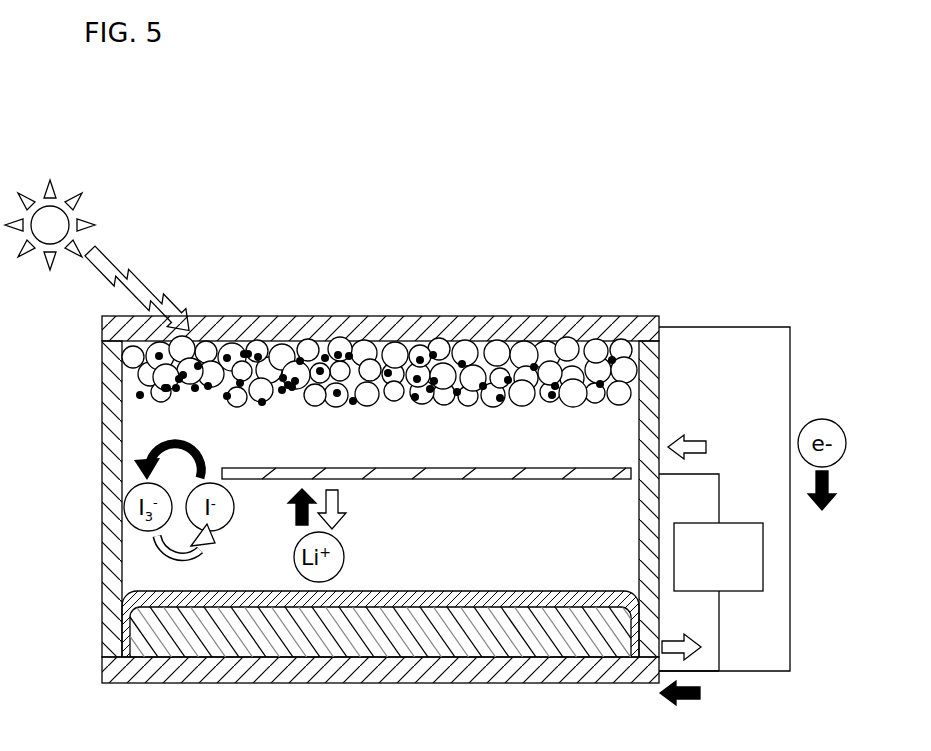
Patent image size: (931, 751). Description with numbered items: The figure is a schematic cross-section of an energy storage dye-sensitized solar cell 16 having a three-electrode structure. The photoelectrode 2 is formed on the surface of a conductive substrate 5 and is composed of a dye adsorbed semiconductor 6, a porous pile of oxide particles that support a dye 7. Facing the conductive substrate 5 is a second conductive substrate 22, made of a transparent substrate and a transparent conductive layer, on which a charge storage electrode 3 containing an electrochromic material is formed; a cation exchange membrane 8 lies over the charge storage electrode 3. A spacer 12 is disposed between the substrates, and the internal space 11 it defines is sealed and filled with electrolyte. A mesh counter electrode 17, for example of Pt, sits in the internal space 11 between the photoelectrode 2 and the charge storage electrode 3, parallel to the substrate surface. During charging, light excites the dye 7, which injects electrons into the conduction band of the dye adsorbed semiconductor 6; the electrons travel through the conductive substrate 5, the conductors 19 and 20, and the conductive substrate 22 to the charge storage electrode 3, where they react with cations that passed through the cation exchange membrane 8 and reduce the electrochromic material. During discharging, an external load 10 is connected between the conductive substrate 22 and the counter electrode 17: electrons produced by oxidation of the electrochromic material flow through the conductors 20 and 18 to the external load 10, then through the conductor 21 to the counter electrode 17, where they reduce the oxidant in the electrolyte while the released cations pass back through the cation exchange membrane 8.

The photoelectrode 2 is at (338, 404).
The charge storage electrode 3 is at (128, 603).
The conductive substrate 5 is at (102, 330).
The dye adsorbed semiconductor 6 is at (118, 392).
The dye 7 is at (150, 396).
The cation exchange membrane 8 is at (150, 591).
The external load 10 is at (764, 558).
The internal space 11 is at (617, 410).
The spacer 12 is at (660, 425).
The energy storage dye-sensitized solar cell 16 is at (410, 290).
The counter electrode 17 is at (384, 468).
The conductor 18 is at (720, 622).
The conductor 19 is at (791, 392).
The conductor 20 is at (707, 672).
The conductor 21 is at (720, 496).
The conductive substrate 22 is at (102, 672).